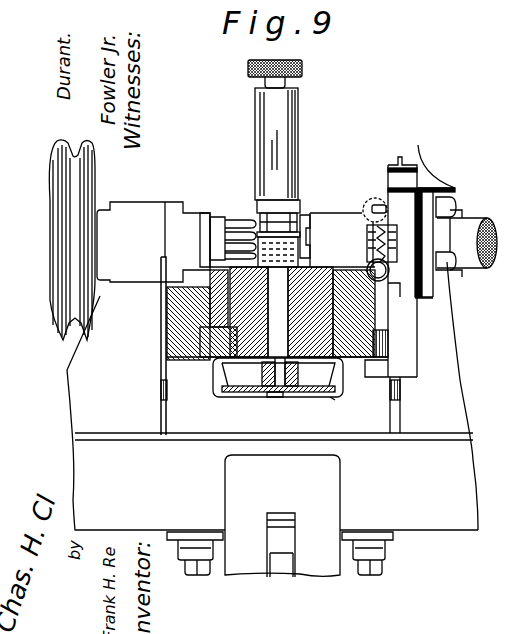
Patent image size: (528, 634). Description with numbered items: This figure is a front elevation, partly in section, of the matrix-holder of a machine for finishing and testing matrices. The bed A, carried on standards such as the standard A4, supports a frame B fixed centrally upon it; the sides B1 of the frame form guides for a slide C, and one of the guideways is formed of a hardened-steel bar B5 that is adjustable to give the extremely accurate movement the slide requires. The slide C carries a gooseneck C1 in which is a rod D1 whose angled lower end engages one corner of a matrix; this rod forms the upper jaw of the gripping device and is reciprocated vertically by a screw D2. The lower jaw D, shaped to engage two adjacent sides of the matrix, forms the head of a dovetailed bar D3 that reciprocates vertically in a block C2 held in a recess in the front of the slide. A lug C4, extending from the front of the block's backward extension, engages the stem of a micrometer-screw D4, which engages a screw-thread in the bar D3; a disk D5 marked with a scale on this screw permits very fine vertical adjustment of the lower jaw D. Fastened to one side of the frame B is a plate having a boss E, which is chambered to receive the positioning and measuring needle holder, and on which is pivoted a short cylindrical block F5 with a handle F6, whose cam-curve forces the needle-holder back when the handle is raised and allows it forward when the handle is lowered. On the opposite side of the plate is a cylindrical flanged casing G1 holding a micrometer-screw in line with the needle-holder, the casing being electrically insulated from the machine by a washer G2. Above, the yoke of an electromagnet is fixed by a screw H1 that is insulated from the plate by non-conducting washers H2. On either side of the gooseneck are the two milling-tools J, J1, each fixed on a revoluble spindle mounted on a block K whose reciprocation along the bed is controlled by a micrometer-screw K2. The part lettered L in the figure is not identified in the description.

The block K is at (123, 306).
The hardened-steel bar B5 is at (173, 313).
The sides of frame B1 is at (173, 326).
The slide C is at (167, 357).
The lower jaw D is at (277, 250).
The rod D1 is at (279, 201).
The screw D2 is at (303, 70).
The gooseneck C1 is at (299, 104).
The milling-tool J1 is at (240, 220).
The milling-tool J is at (300, 218).
The boss E is at (348, 220).
The pin L is at (300, 238).
The short cylindrical block F5 is at (390, 230).
The handle F6 is at (387, 275).
The screw H1 is at (402, 165).
The non-conducting washers H2 is at (385, 223).
The washer G2 is at (420, 203).
The cylindrical flanged casing G1 is at (462, 227).
The frame B is at (390, 339).
The micrometer-screw K2 is at (163, 390).
The block C2 is at (232, 362).
The lug C4 is at (307, 383).
The dovetailed bar D3 is at (262, 365).
The disk D5 is at (335, 397).
The bed A is at (296, 418).
The micrometer-screw D4 is at (282, 350).
The standard A4 is at (317, 552).